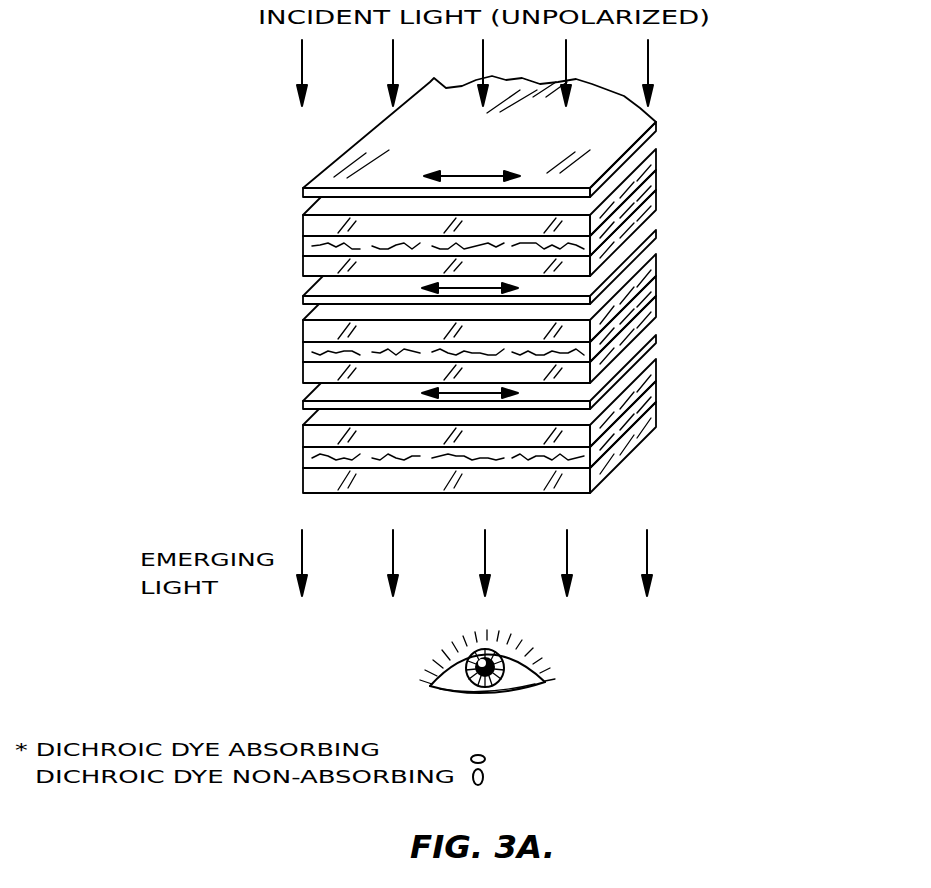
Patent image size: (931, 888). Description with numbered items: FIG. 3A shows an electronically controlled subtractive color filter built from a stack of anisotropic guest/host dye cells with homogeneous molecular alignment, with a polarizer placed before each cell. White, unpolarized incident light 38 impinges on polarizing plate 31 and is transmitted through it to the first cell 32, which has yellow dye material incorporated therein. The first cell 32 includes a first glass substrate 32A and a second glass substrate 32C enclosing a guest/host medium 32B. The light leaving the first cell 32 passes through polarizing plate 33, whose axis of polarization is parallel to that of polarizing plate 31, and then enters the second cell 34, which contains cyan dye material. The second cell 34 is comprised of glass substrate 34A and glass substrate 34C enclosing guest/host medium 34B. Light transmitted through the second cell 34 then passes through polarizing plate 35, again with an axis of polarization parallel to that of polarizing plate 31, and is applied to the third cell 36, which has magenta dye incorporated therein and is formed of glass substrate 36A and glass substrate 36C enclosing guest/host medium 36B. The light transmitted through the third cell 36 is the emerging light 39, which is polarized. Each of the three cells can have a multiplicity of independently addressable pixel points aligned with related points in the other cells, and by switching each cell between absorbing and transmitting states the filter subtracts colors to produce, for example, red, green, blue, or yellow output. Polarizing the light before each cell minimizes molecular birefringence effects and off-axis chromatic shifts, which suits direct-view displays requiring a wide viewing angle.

The polarizing plate 31 is at (658, 118).
The cell 1 32 is at (373, 218).
The first glass substrate 32A is at (303, 218).
The guest/host medium 32B is at (303, 246).
The second glass substrate 32C is at (303, 266).
The polarizing plate 33 is at (658, 232).
The cell 2 34 is at (382, 326).
The glass substrate 34A is at (303, 334).
The guest/host medium 34B is at (303, 356).
The glass substrate 34C is at (303, 376).
The polarizing plate 35 is at (658, 337).
The cell 3 36 is at (369, 433).
The glass substrate 36A is at (303, 438).
The guest/host medium 36B is at (303, 462).
The glass substrate 36C is at (303, 484).
The incident light 38 is at (650, 62).
The emerging light 39 is at (648, 550).